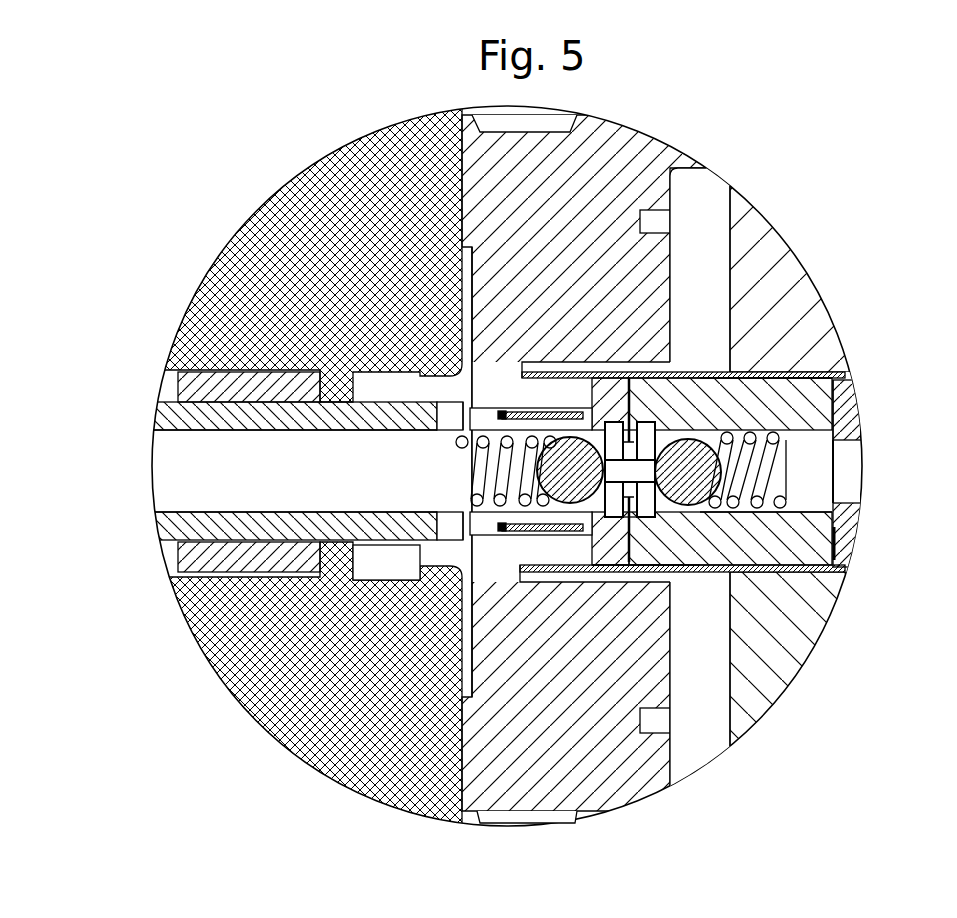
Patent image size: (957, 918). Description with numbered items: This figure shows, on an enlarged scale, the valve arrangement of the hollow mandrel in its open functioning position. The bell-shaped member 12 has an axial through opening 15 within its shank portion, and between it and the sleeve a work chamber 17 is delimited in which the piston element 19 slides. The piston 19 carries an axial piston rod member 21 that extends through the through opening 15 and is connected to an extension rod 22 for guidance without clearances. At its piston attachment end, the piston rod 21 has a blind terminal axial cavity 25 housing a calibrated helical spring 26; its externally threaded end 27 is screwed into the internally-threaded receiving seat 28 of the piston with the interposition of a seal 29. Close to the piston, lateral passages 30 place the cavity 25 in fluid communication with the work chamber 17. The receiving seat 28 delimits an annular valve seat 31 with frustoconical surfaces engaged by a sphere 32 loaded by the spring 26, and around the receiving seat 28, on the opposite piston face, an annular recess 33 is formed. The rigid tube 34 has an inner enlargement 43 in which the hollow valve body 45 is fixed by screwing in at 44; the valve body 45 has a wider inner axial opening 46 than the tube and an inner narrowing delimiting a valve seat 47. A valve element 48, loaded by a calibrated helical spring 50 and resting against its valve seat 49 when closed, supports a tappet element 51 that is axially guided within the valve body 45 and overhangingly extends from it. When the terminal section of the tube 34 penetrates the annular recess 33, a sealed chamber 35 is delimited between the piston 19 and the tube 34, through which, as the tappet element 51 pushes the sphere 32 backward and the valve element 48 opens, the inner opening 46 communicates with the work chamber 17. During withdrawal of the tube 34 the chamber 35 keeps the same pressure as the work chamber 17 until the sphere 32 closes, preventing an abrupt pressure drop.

The bell-shaped member 12 is at (247, 218).
The axial through opening 15 is at (443, 373).
The work chamber 17 is at (470, 675).
The piston element 19 is at (680, 181).
The piston rod member 21 is at (178, 404).
The extension rod 22 is at (352, 558).
The blind terminal axial cavity 25 is at (175, 468).
The calibrated helical spring 26 is at (492, 452).
The externally threaded end 27 is at (567, 517).
The receiving seat 28 is at (537, 475).
The seal 29 is at (503, 527).
The lateral passages 30 is at (447, 422).
The annular valve seat 31 is at (630, 522).
The sphere 32 is at (600, 390).
The annular recess 33 is at (540, 366).
The tube 34 is at (802, 573).
The sealed chamber 35 is at (700, 572).
The inner enlargement 43 is at (828, 563).
The screwing 44 is at (815, 400).
The hollow valve body 45 is at (834, 398).
The inner axial opening 46 is at (810, 473).
The valve seat 47 is at (822, 440).
The valve element 48 is at (762, 572).
The valve seat 49 is at (660, 428).
The calibrated helical spring 50 is at (758, 480).
The tappet element 51 is at (615, 462).